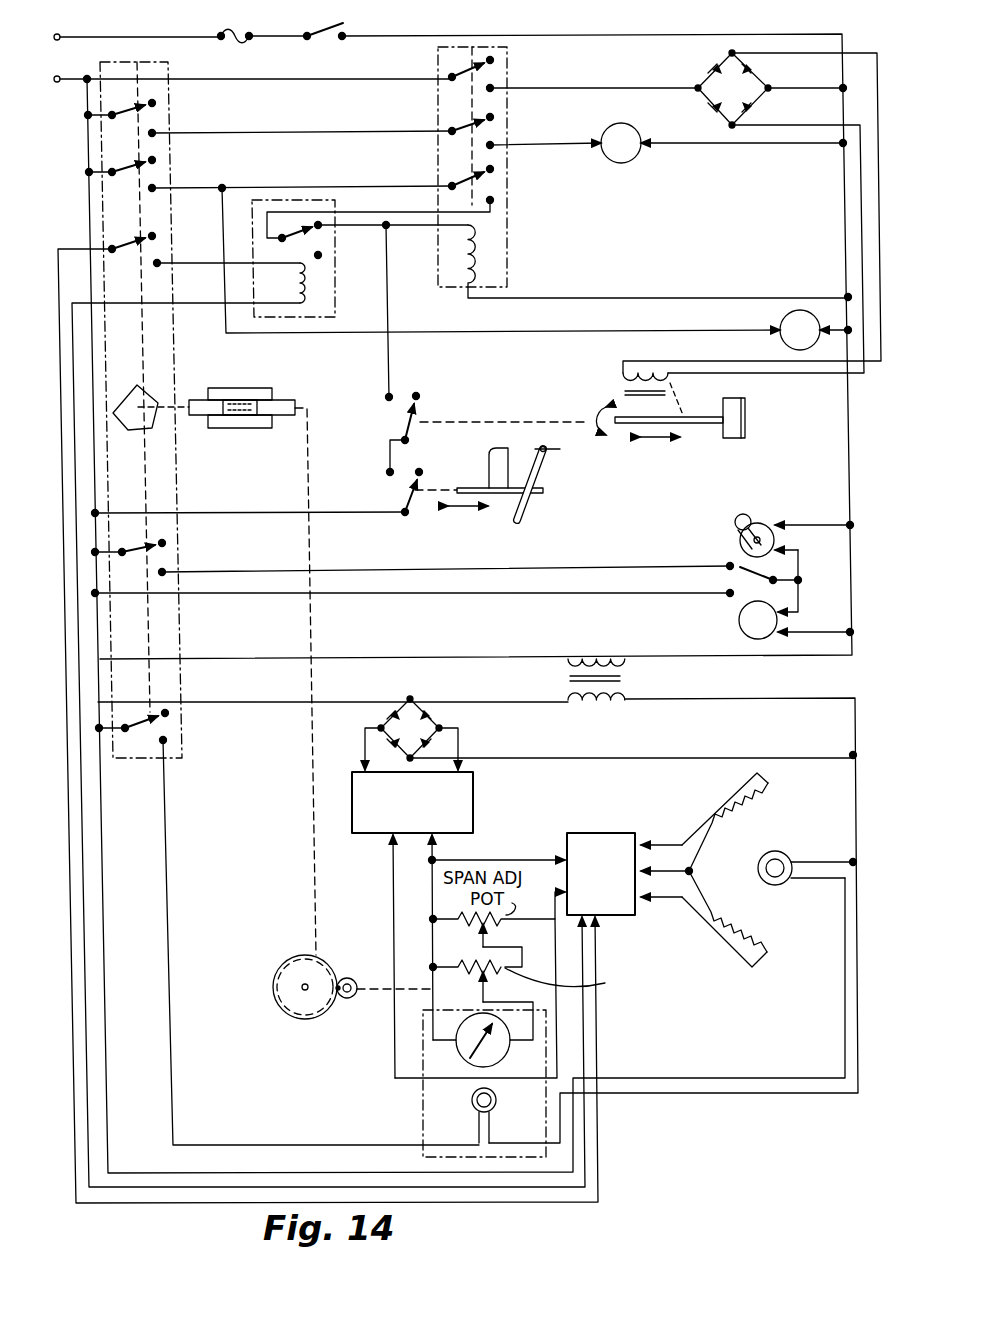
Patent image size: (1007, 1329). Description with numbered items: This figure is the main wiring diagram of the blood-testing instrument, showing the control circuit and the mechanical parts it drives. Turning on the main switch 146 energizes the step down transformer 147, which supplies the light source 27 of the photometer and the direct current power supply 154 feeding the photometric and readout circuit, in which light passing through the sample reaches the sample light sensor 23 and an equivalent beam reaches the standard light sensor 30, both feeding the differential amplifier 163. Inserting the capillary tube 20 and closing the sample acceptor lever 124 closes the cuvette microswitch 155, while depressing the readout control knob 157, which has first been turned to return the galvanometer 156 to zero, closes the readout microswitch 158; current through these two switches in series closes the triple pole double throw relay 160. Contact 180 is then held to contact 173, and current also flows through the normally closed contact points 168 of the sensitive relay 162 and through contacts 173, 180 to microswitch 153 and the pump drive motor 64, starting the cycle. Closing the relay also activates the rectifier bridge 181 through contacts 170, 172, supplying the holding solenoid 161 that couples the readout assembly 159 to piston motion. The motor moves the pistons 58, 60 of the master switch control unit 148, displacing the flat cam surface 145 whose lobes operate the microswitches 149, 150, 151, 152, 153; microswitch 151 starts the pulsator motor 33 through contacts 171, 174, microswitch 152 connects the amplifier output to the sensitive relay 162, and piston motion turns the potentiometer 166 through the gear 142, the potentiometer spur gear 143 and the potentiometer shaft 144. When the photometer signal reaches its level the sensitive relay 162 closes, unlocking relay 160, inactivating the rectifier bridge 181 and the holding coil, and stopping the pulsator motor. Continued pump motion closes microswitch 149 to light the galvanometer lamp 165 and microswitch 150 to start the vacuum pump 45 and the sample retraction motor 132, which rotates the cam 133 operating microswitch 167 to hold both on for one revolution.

The main switch 146 is at (331, 29).
The master switch control unit 148 is at (169, 68).
The microswitch 151 is at (138, 112).
The microswitch 153 is at (120, 174).
The microswitch 152 is at (120, 252).
The contact 170 is at (456, 80).
The contact 171 is at (456, 136).
The contact 180 is at (460, 190).
The contact 173 is at (493, 60).
The contact 172 is at (492, 84).
The contact 174 is at (492, 138).
The triple pole double throw relay 160 is at (510, 270).
The rectifier bridge 181 is at (708, 68).
The pulsator motor 33 is at (648, 120).
The pump drive motor 64 is at (783, 324).
The holding solenoid 161 is at (620, 374).
The readout control knob 157 is at (750, 416).
The normally closed contact points 168 is at (302, 228).
The sensitive 5000 ohm relay 162 is at (331, 306).
The flat cam surface 145 is at (140, 390).
The discharge piston 58 is at (198, 400).
The pump piston 60 is at (286, 400).
The readout microswitch 158 is at (402, 426).
The cuvette microswitch 155 is at (402, 501).
The capillary tube 20 is at (474, 488).
The sample acceptor lever 124 is at (530, 523).
The cam 133 is at (733, 520).
The sample retraction motor 132 is at (765, 527).
The microswitch 167 is at (733, 574).
The vacuum pump 45 is at (740, 629).
The microswitch 150 is at (148, 536).
The step down transformer 147 is at (612, 680).
The microswitch 149 is at (144, 725).
The direct current power supply 154 is at (473, 794).
The potentiometer 166 is at (482, 958).
The galvanometer 156 is at (482, 1060).
The readout assembly 159 is at (384, 1087).
The galvanometer lamp 165 is at (468, 1115).
The differential amplifier 163 is at (598, 833).
The sample light sensor 23 is at (756, 806).
The standard light sensor 30 is at (745, 926).
The light source 27 is at (782, 860).
The gear 142 is at (282, 968).
The potentiometer shaft 144 is at (346, 978).
The potentiometer spur gear 143 is at (348, 1002).